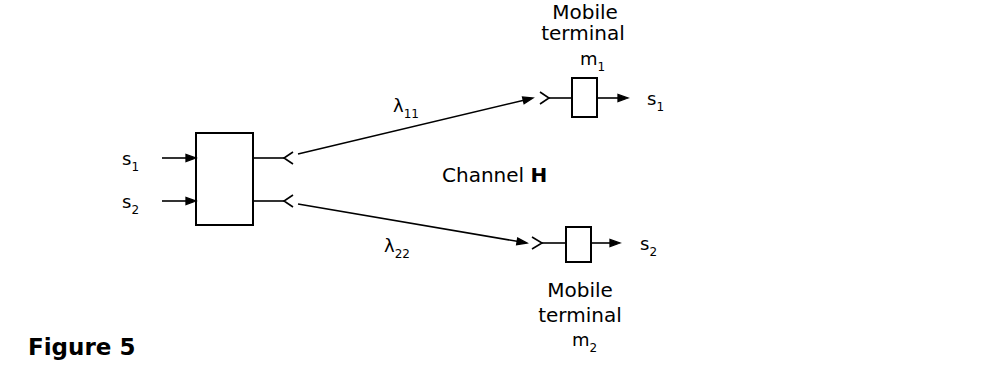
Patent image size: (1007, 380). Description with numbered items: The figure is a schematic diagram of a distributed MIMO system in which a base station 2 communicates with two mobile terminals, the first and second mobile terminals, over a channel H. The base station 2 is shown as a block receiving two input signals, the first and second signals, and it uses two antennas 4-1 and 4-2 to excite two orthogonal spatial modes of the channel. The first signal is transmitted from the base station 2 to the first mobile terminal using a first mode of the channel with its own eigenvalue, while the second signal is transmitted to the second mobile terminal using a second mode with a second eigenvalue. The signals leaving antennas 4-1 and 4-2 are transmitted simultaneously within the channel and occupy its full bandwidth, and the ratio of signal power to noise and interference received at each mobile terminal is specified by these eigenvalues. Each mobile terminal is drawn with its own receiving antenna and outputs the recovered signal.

The base station 2 is at (223, 133).
The antenna 4-1 is at (272, 155).
The antenna 4-2 is at (268, 201).